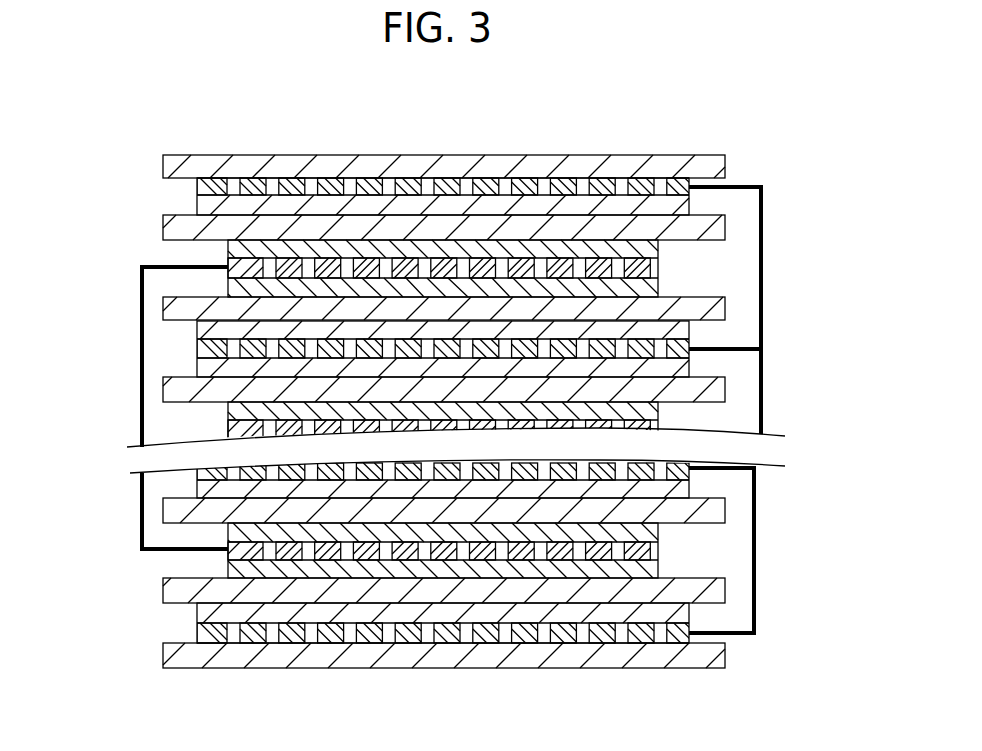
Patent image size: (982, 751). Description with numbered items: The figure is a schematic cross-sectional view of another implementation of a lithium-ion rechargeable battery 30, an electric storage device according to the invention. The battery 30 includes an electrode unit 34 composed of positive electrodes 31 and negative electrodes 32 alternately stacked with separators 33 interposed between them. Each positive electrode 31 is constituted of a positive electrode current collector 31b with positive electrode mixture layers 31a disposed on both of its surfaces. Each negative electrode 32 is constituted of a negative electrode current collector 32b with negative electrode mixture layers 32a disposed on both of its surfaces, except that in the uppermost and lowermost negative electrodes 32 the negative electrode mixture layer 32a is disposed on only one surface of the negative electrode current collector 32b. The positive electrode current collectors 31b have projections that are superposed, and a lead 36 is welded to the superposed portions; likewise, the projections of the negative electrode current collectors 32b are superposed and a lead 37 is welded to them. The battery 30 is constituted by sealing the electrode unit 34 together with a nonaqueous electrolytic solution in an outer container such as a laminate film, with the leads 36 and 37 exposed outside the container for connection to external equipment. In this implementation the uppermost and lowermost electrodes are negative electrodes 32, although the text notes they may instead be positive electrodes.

The lithium-ion rechargeable battery 30 is at (618, 128).
The positive electrode 31 is at (83, 593).
The positive electrode mixture layer 31a is at (228, 568).
The positive electrode current collector 31b is at (228, 551).
The negative electrode 32 is at (840, 390).
The negative electrode mixture layer 32a is at (683, 370).
The negative electrode current collector 32b is at (688, 343).
The separator 33 is at (718, 660).
The electrode unit 34 is at (700, 255).
The lead 36 is at (142, 349).
The lead 37 is at (761, 197).